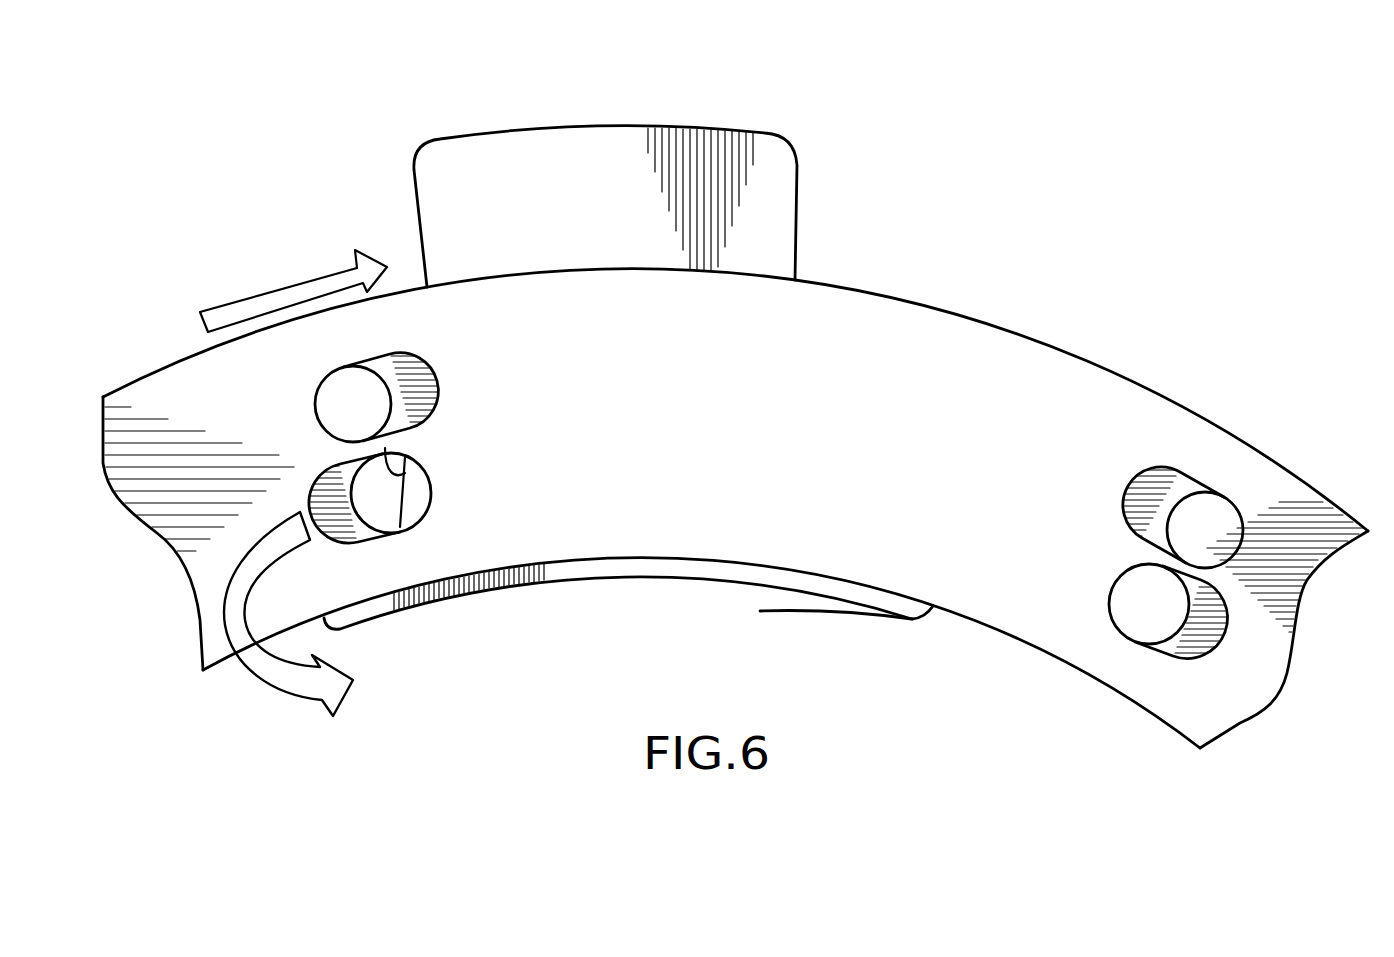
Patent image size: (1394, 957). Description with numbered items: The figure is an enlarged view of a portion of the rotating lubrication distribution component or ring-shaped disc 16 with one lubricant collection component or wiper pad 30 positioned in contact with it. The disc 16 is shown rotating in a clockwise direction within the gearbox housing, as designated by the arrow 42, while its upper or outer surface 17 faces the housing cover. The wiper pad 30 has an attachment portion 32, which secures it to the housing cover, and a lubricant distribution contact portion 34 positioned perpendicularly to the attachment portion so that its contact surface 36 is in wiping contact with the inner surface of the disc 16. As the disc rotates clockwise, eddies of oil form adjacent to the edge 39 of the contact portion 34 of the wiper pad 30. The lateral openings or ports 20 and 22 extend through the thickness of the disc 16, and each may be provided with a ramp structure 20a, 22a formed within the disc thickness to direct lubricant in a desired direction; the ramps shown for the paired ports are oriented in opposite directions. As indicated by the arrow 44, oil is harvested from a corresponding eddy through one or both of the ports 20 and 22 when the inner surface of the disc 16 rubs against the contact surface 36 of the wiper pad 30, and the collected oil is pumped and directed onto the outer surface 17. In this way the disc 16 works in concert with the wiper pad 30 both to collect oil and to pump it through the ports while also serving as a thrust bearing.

The ring-shaped disc 16 is at (970, 304).
The upper surface 17 is at (713, 424).
The lateral opening 20 is at (385, 505).
The ramp structure 20a is at (343, 517).
The lateral opening 22 is at (332, 395).
The ramp structure 22a is at (410, 383).
The lubricant collection component 30 is at (457, 128).
The attachment portion 32 is at (775, 176).
The lubricant distribution contact portion 34 is at (793, 597).
The contact surface 36 is at (595, 570).
The edge 39 is at (385, 450).
The arrow 42 is at (318, 280).
The arrow 44 is at (275, 678).